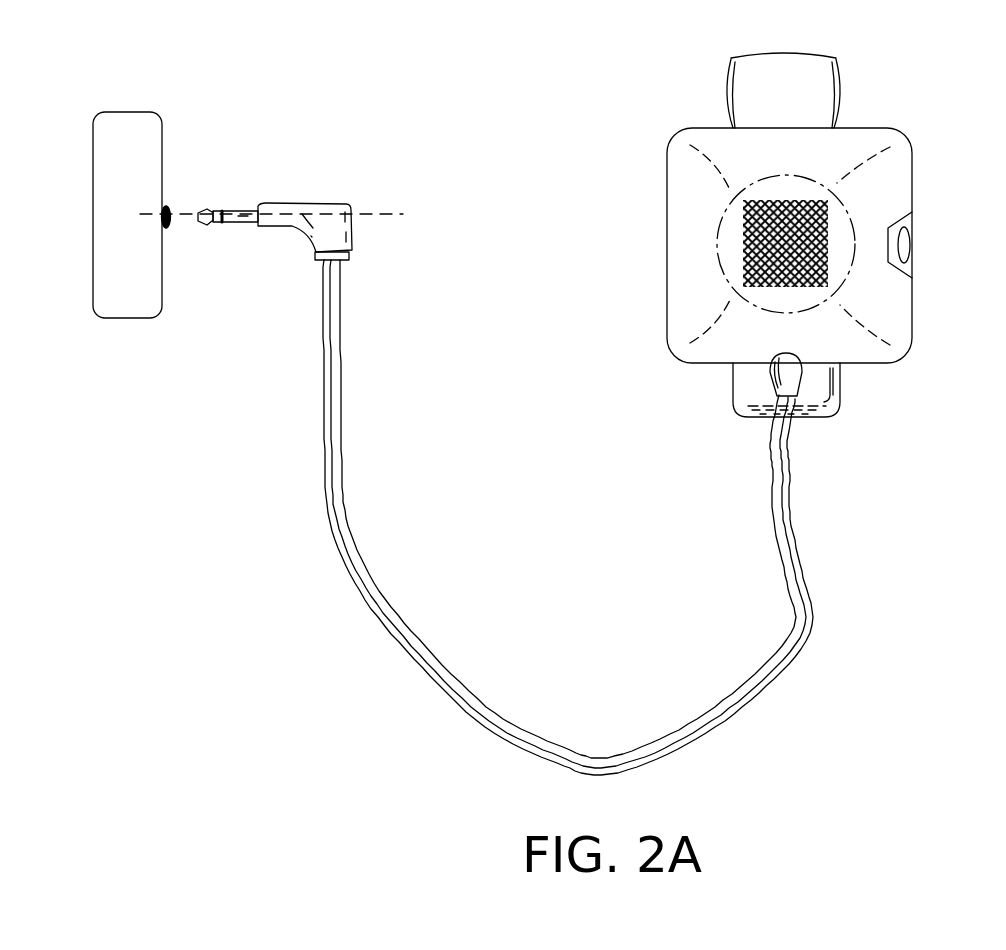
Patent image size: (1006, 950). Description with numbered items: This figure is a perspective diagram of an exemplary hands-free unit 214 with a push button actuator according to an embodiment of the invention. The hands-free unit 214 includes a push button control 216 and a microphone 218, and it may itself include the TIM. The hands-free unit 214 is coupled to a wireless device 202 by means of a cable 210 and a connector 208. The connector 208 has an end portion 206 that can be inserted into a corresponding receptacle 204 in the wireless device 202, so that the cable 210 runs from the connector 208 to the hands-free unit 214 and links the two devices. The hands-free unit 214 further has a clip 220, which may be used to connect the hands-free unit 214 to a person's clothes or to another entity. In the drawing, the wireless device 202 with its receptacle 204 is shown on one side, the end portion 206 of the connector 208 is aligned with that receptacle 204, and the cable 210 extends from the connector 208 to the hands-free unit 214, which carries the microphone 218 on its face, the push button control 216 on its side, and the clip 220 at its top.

The wireless device 202 is at (133, 111).
The receptacle 204 is at (166, 206).
The end portion 206 is at (232, 208).
The connector 208 is at (315, 203).
The cable 210 is at (341, 448).
The hands-free unit 214 is at (877, 127).
The push button control 216 is at (912, 236).
The microphone 218 is at (750, 235).
The clip 220 is at (797, 53).